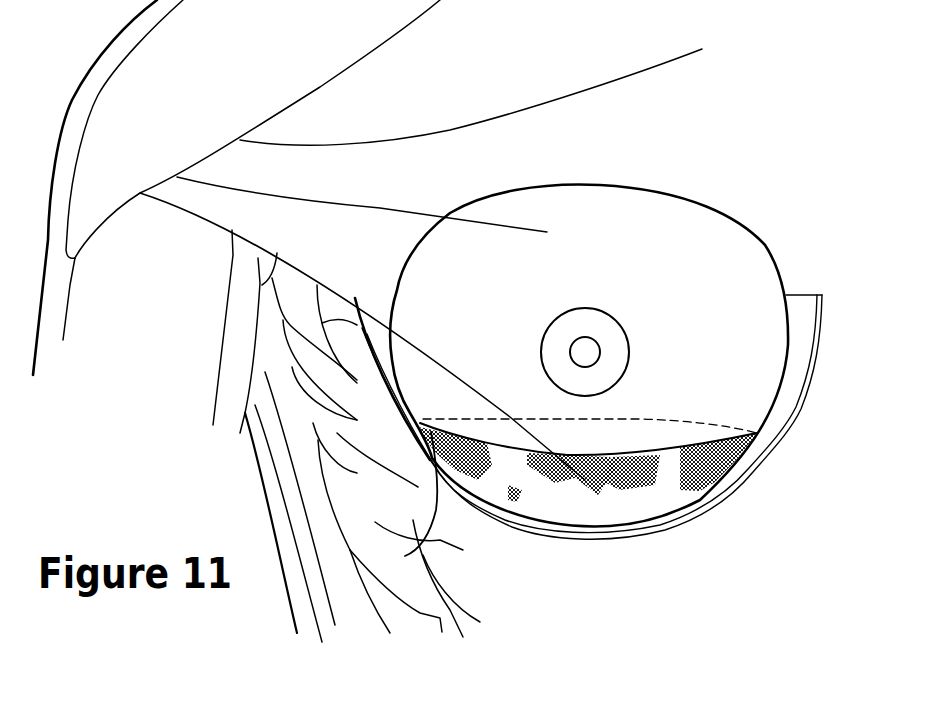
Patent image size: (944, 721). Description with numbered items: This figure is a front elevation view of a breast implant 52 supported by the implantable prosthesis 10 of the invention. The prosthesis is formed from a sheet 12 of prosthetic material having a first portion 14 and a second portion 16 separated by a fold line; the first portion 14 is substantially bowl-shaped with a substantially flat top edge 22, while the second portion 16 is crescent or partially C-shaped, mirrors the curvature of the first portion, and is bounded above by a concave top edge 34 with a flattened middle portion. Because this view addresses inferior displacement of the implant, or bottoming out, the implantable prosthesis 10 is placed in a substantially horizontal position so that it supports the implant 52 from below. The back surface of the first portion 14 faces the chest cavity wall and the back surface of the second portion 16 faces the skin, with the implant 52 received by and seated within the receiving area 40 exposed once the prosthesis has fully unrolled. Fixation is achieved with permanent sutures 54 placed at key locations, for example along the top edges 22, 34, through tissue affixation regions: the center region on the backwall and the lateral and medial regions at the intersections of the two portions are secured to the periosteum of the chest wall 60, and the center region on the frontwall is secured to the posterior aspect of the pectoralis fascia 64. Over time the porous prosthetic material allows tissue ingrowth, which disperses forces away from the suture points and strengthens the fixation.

The implantable prosthesis 10 is at (770, 461).
The sheet 12 is at (640, 590).
The first portion 14 is at (425, 424).
The second portion 16 is at (716, 476).
The top edge 22 is at (756, 396).
The concave top edge 34 is at (478, 428).
The receiving area 40 is at (405, 502).
The implant 52 is at (723, 213).
The permanent sutures 54 is at (478, 427).
The chest wall 60 is at (770, 243).
The pectoralis fascia 64 is at (643, 428).